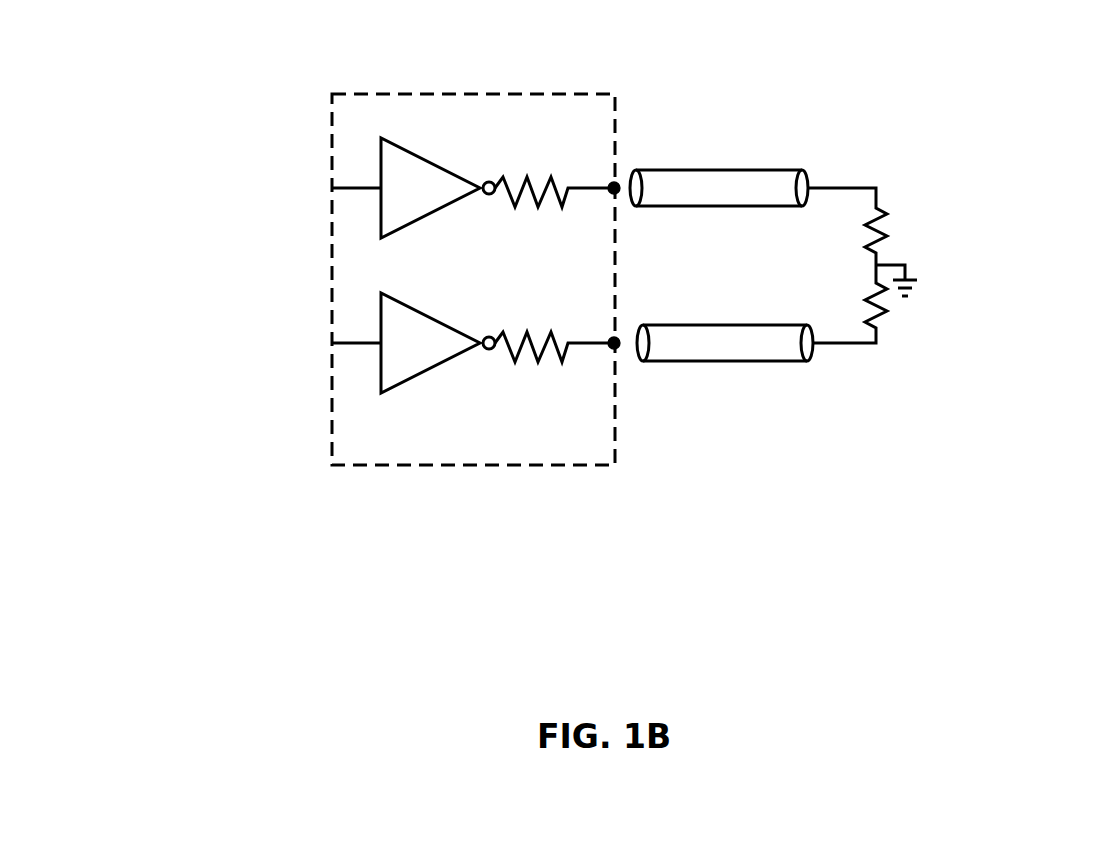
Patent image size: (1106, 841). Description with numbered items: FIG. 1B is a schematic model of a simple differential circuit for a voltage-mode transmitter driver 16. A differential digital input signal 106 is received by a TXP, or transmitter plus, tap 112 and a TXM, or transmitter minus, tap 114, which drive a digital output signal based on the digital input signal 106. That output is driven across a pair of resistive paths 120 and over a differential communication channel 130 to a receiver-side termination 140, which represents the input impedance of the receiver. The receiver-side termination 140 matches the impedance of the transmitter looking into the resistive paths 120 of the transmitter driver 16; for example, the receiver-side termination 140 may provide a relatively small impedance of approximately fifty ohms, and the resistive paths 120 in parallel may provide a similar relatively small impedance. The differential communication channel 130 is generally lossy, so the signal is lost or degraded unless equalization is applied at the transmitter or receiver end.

The voltage-mode transmitter driver 16 is at (330, 107).
The differential digital input signal 106 is at (355, 192).
The TXP tap 112 is at (438, 188).
The TXM tap 114 is at (438, 343).
The resistive paths 120 is at (523, 212).
The differential communication channel 130 is at (725, 205).
The receiver-side termination 140 is at (888, 255).